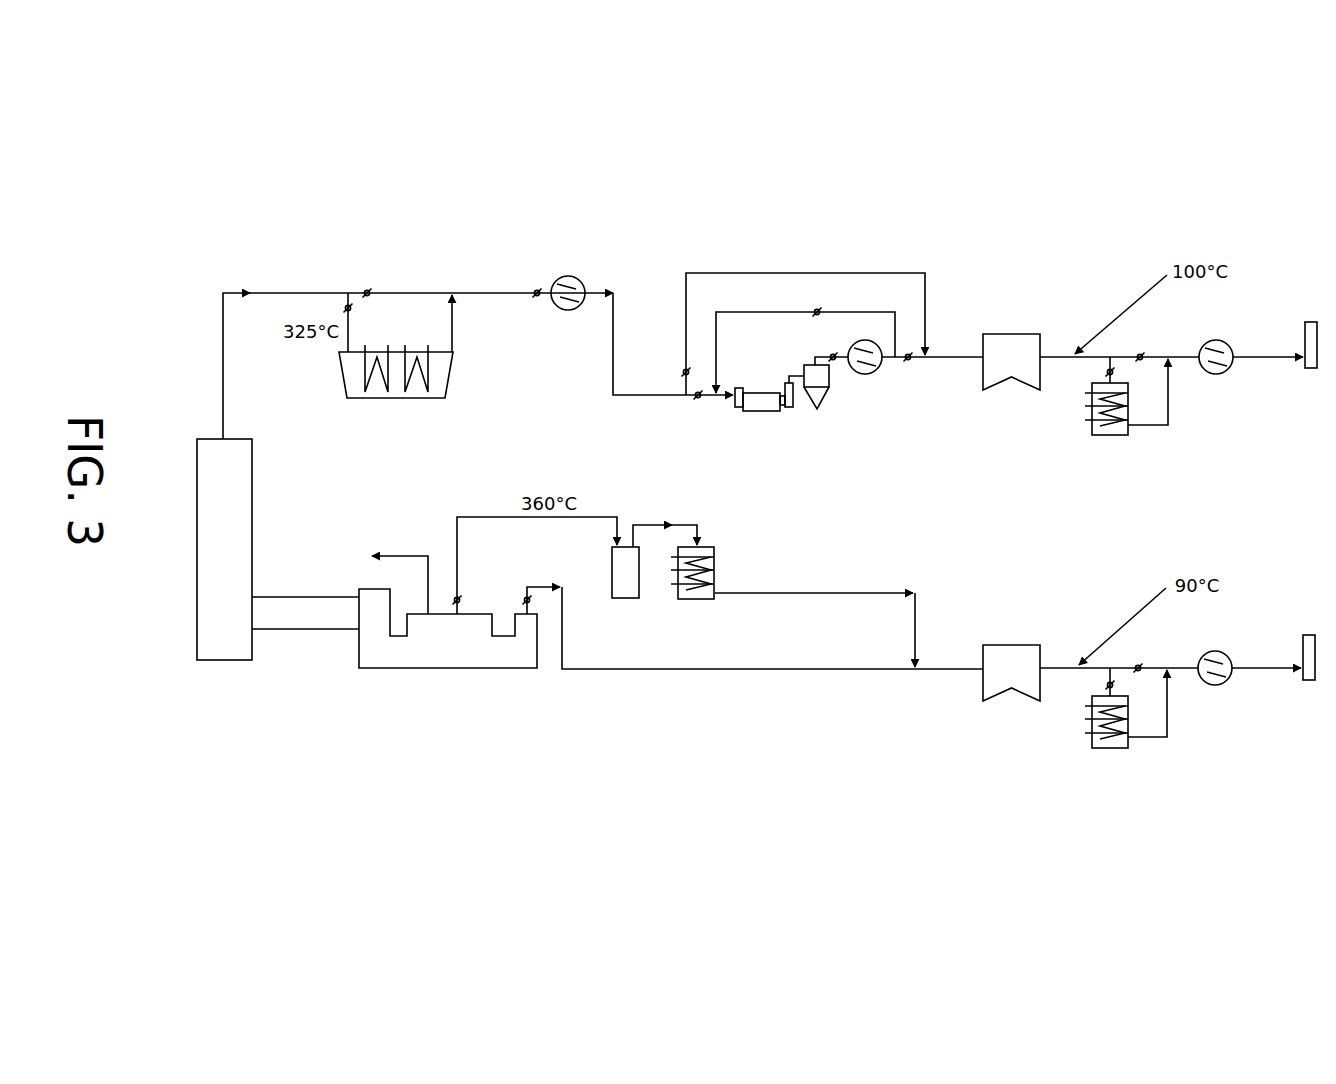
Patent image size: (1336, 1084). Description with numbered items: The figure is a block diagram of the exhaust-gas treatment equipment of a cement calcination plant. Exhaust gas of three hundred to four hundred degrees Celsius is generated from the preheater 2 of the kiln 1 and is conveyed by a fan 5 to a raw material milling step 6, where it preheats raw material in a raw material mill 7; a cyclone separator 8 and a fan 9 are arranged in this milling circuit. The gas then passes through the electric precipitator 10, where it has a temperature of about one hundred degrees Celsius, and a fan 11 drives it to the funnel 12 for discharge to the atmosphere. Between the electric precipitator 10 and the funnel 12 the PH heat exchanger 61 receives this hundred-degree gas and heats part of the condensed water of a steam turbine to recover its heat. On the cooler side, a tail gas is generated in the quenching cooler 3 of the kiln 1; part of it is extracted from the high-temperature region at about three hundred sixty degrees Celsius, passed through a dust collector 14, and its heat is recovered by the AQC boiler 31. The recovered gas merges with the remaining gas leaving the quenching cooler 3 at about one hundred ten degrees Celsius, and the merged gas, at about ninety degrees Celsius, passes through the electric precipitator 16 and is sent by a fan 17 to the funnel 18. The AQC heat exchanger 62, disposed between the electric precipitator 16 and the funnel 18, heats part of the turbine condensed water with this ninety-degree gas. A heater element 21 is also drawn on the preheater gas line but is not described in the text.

The kiln 1 is at (287, 605).
The preheater 2 is at (200, 548).
The quenching cooler 3 is at (470, 662).
The fan 5 is at (566, 276).
The raw material milling step 6 is at (785, 254).
The raw material mill 7 is at (740, 411).
The cyclone separator 8 is at (827, 397).
The fan 9 is at (872, 372).
The electric precipitator 10 is at (1010, 334).
The fan 11 is at (1220, 340).
The funnel 12 is at (1310, 322).
The dust collector 14 is at (611, 567).
The electric precipitator 16 is at (1010, 645).
The fan 17 is at (1220, 650).
The funnel 18 is at (1308, 635).
The heater 21 is at (454, 378).
The AQC boiler 31 is at (717, 551).
The PH heat exchanger 61 is at (1090, 428).
The AQC heat exchanger 62 is at (1090, 740).